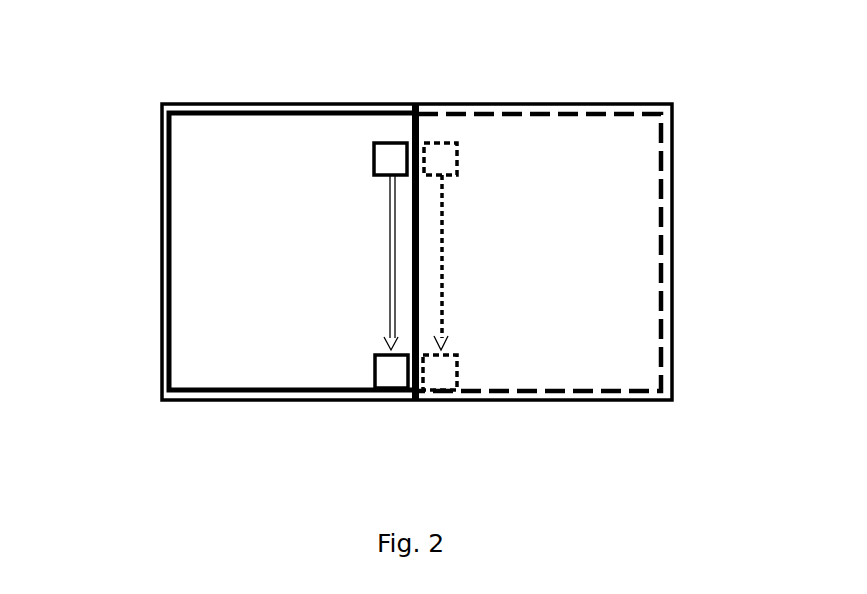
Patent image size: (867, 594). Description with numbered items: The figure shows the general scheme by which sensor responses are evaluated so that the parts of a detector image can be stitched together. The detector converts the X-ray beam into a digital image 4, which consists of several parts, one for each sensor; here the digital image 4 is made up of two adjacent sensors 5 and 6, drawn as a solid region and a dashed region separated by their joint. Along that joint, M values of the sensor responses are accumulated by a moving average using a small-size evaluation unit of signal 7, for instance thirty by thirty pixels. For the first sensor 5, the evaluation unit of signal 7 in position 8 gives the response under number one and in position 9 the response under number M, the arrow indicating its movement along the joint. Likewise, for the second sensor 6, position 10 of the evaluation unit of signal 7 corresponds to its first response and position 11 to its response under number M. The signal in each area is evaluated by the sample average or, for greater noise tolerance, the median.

The digital image 4 is at (432, 105).
The sensor 5 is at (213, 313).
The sensor 6 is at (620, 313).
The evaluation unit of signal 7 is at (392, 160).
The position of evaluation unit of signal 8 is at (389, 181).
The position of evaluation unit of signal 9 is at (389, 349).
The position of evaluation unit of signal 10 is at (458, 177).
The position of evaluation unit of signal 11 is at (442, 350).